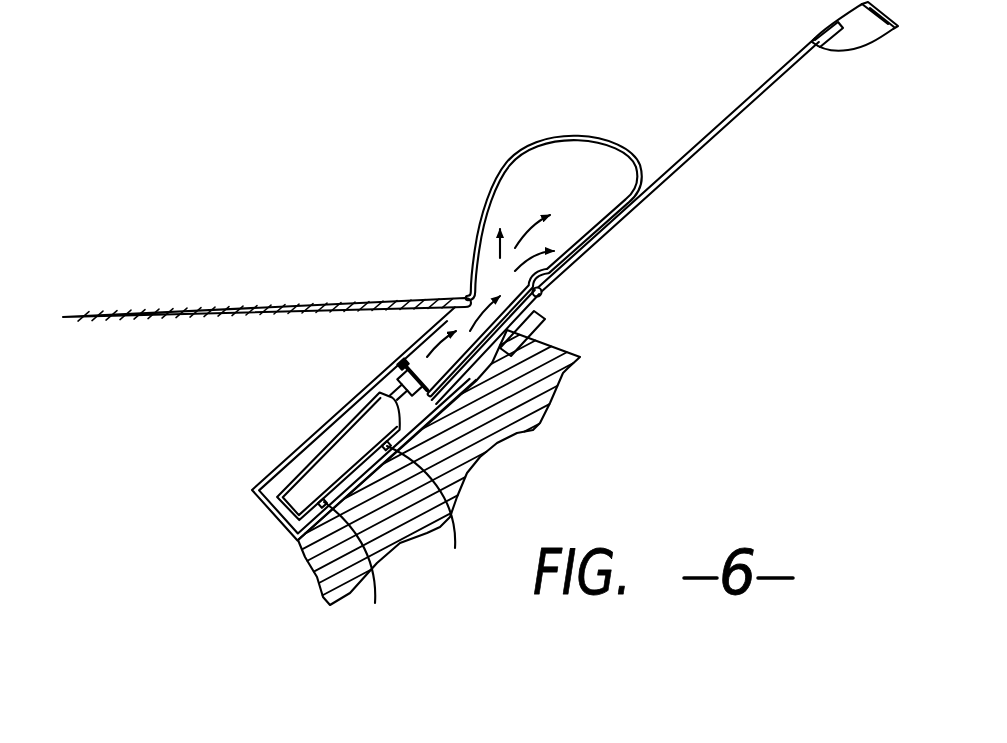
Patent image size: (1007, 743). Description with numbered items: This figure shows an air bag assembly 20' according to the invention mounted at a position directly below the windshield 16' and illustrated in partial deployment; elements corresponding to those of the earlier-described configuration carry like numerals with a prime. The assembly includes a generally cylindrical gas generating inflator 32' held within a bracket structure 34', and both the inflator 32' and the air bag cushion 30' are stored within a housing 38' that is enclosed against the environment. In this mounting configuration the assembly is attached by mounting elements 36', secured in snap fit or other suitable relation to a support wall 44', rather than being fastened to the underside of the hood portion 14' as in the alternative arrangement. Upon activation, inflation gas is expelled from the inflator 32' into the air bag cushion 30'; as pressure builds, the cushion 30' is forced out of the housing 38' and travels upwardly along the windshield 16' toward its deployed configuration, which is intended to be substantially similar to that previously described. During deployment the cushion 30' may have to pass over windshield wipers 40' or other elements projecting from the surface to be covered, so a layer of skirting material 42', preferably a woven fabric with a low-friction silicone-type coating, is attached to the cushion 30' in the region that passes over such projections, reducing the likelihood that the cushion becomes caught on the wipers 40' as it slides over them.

The hood portion 14' is at (267, 292).
The windshield 16' is at (716, 148).
The air bag assembly 20' is at (190, 433).
The air bag cushion 30' is at (533, 261).
The gas generating inflator 32' is at (373, 423).
The bracket structure 34' is at (369, 370).
The mounting elements 36' is at (400, 541).
The housing 38' is at (356, 7).
The windshield wipers 40' is at (600, 277).
The layer of skirting material 42' is at (554, 347).
The support wall 44' is at (475, 467).